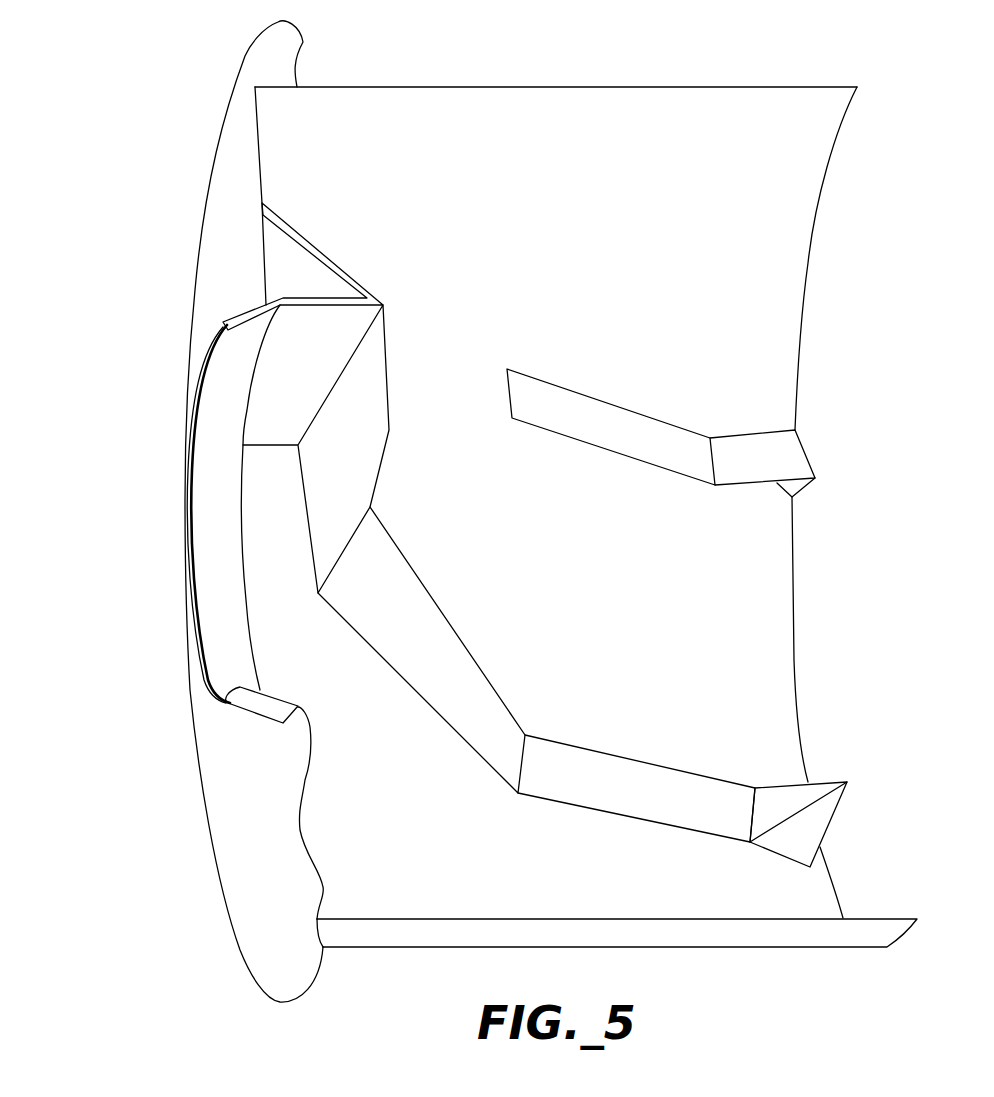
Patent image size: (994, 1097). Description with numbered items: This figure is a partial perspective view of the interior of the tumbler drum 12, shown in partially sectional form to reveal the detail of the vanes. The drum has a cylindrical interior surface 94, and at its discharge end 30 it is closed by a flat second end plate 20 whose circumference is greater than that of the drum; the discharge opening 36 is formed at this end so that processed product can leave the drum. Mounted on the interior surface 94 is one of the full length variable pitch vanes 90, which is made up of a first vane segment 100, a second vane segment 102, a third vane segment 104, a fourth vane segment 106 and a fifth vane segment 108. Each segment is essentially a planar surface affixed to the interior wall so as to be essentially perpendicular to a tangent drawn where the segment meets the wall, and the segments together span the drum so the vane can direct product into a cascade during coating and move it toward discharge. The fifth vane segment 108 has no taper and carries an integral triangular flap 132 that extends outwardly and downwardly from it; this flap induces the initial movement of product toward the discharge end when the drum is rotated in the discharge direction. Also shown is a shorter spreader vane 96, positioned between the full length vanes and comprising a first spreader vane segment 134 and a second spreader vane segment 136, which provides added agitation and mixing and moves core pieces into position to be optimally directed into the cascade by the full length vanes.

The tumbler drum 12 is at (778, 83).
The second end plate 20 is at (255, 52).
The discharge end 30 is at (145, 86).
The discharge opening 36 is at (223, 523).
The full length variable pitch vane 90 is at (443, 732).
The cylindrical interior surface 94 is at (770, 527).
The spreader vane 96 is at (623, 480).
The first vane segment 100 is at (290, 270).
The second vane segment 102 is at (372, 445).
The third vane segment 104 is at (412, 613).
The fourth vane segment 106 is at (593, 770).
The fifth vane segment 108 is at (815, 792).
The triangular flap 132 is at (805, 847).
The first spreader vane segment 134 is at (550, 397).
The second spreader vane segment 136 is at (788, 450).